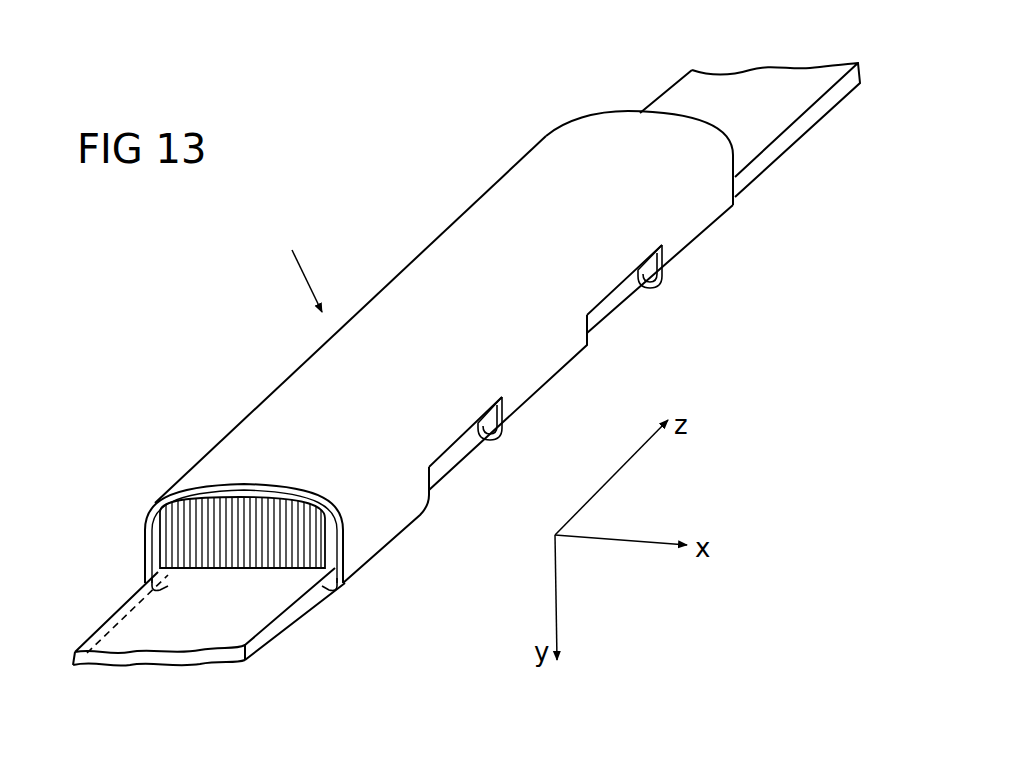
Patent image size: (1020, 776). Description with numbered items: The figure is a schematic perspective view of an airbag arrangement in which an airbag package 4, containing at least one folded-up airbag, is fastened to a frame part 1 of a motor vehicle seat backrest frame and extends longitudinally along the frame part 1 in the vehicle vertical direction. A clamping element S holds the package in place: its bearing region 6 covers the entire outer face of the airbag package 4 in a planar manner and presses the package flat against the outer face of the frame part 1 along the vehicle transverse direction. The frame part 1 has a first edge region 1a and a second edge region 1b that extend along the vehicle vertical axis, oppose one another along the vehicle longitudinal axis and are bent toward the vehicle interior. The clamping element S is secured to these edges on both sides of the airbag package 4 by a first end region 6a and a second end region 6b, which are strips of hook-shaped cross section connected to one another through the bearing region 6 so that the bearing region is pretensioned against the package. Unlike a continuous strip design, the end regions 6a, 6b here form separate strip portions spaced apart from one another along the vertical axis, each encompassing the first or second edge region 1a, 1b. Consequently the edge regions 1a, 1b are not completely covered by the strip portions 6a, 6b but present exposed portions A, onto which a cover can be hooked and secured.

The frame part 1 is at (757, 127).
The first edge region 1a is at (283, 620).
The second edge region 1b is at (108, 623).
The airbag package 4 is at (215, 515).
The bearing region 6 is at (413, 310).
The first end region 6a is at (690, 235).
The second end region 6b is at (150, 584).
The exposed portion A is at (615, 297).
The clamping element S is at (297, 264).